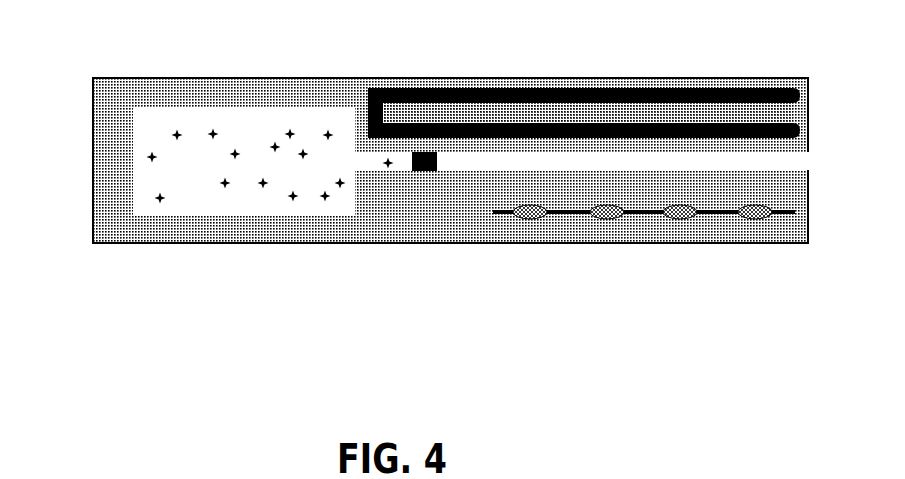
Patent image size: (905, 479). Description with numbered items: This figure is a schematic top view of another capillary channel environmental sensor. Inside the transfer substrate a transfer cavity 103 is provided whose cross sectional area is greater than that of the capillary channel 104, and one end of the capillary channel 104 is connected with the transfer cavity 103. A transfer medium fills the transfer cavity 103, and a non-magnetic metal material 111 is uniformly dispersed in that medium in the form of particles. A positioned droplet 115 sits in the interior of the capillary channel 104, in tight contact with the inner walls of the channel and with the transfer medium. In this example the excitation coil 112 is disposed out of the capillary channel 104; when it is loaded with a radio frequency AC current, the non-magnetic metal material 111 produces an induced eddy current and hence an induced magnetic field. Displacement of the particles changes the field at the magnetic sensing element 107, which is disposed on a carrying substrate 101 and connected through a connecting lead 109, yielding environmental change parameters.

The carrying substrate 101 is at (108, 160).
The transfer cavity 103 is at (203, 158).
The capillary channel 104 is at (363, 110).
The magnetic sensing element 107 is at (680, 213).
The connecting lead 109 is at (493, 212).
The non-magnetic metal material 111 is at (303, 153).
The excitation coil 112 is at (800, 155).
The positioned droplet 115 is at (420, 173).